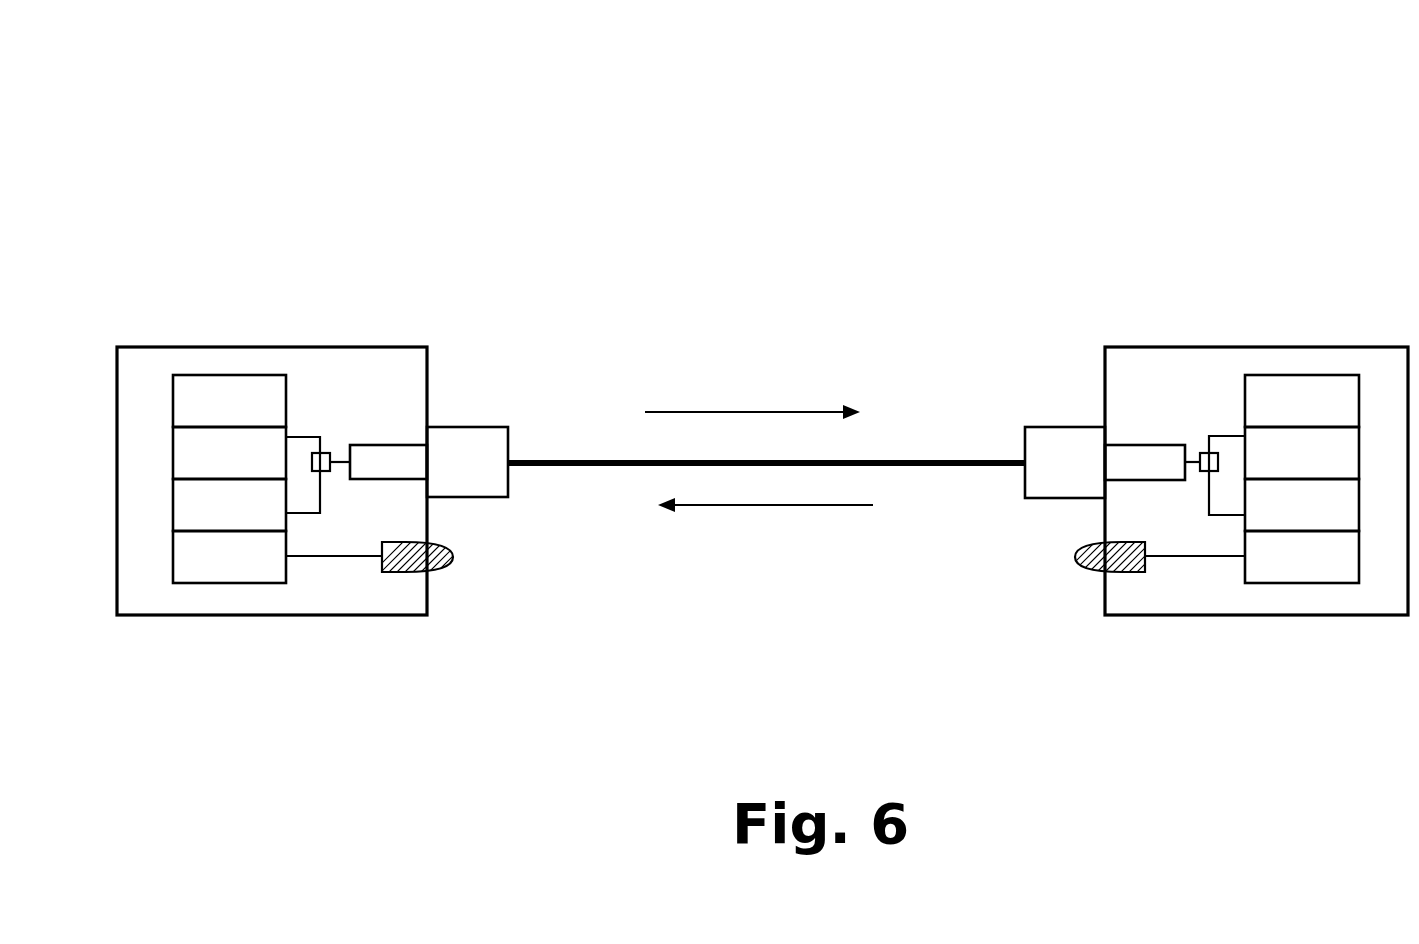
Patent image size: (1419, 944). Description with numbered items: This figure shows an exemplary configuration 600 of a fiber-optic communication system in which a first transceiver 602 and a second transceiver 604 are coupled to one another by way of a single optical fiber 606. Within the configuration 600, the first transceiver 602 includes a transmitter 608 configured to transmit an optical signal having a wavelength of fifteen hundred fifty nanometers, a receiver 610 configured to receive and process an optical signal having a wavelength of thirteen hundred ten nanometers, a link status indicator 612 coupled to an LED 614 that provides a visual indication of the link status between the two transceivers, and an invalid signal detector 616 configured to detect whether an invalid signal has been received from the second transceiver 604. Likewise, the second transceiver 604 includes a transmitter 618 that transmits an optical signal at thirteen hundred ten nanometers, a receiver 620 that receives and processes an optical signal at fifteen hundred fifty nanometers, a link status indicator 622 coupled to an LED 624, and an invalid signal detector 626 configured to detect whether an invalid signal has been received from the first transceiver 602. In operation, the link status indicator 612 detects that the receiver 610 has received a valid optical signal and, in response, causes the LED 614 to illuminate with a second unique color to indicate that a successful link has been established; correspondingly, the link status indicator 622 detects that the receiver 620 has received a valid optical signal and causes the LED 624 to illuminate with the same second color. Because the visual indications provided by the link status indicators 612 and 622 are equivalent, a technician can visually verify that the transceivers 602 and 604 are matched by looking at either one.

The configuration 600 is at (588, 128).
The first transceiver 602 is at (287, 348).
The second transceiver 604 is at (1242, 346).
The single optical fiber 606 is at (611, 459).
The transmitter 608 is at (229, 453).
The receiver 610 is at (229, 505).
The link status indicator 612 is at (229, 557).
The LED 614 is at (453, 558).
The invalid signal detector 616 is at (229, 401).
The transmitter 618 is at (1302, 453).
The receiver 620 is at (1302, 505).
The link status indicator 622 is at (1302, 557).
The LED 624 is at (1075, 560).
The invalid signal detector 626 is at (1302, 401).